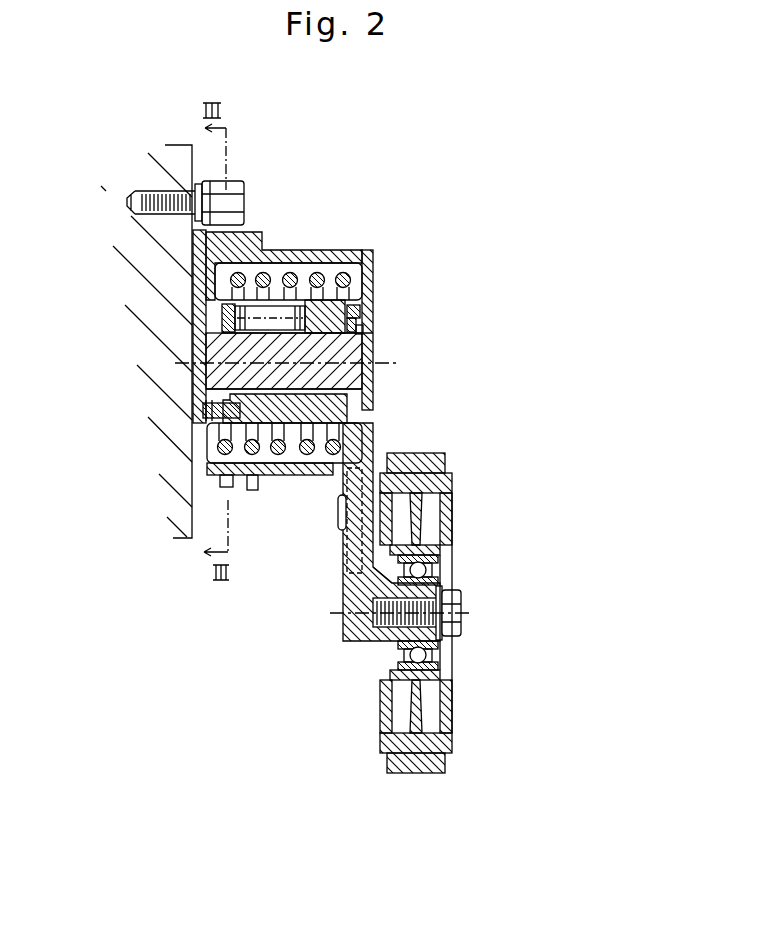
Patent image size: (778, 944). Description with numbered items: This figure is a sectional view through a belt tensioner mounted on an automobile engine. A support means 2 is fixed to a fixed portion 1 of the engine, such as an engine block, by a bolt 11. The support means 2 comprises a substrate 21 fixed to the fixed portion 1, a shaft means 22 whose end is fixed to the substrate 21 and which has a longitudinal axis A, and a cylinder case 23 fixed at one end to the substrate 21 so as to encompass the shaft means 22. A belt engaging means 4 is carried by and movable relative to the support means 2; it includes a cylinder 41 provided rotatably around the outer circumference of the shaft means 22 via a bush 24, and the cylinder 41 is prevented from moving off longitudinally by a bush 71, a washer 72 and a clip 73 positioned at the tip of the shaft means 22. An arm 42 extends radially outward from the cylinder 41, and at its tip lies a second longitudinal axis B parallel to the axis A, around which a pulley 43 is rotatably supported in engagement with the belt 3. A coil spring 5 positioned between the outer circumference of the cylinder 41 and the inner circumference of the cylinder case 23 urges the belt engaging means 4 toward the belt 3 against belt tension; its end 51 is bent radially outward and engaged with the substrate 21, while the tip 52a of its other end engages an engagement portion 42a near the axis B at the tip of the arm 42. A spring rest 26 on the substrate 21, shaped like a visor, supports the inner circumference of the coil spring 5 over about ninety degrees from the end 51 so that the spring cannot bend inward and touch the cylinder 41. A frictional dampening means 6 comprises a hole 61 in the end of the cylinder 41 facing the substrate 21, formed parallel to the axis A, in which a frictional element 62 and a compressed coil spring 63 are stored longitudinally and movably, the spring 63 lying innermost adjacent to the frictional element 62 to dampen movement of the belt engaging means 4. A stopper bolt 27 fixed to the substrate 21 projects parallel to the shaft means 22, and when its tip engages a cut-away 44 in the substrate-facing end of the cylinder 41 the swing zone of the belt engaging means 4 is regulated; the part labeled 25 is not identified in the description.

The fixed portion 1 is at (138, 172).
The bolt 11 is at (228, 183).
The support means 2 is at (270, 240).
The substrate 21 is at (210, 290).
The shaft means 22 is at (375, 378).
The cylinder case 23 is at (270, 471).
The bush 24 is at (235, 347).
The foot 25 is at (229, 478).
The spring rest 26 is at (221, 450).
The stopper bolt 27 is at (215, 420).
The belt 3 is at (425, 772).
The belt engaging means 4 is at (270, 627).
The cylinder 41 is at (307, 413).
The arm 42 is at (357, 648).
The engagement portion 42a is at (340, 515).
The pulley 43 is at (382, 745).
The cut-away 44 is at (204, 403).
The coil spring 5 is at (352, 267).
The end of the coil spring 51 is at (229, 487).
The tip of the outer end of the coil spring 52a is at (346, 563).
The frictional dampening means 6 is at (298, 305).
The hole 61 is at (268, 311).
The frictional element 62 is at (222, 314).
The compressed coil spring 63 is at (313, 250).
The bush 71 is at (356, 306).
The washer 72 is at (360, 318).
The clip 73 is at (365, 330).
The longitudinal axis A is at (398, 363).
The second longitudinal axis B is at (465, 613).